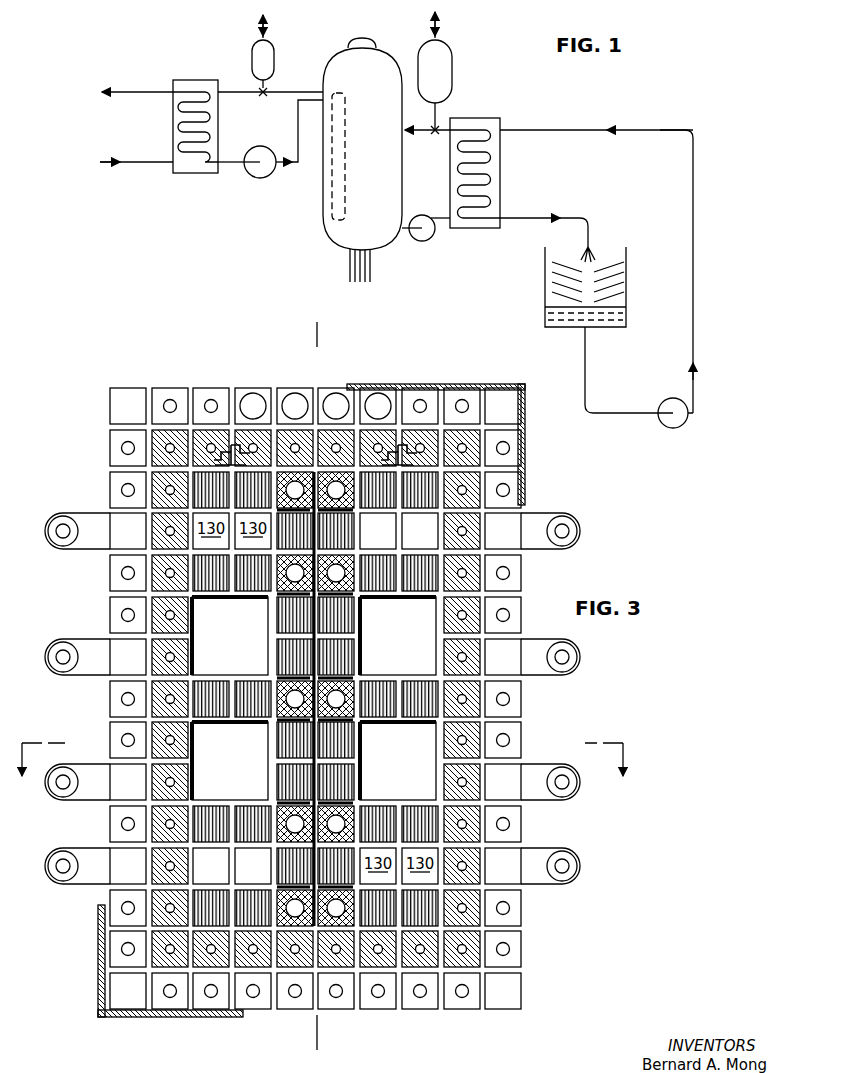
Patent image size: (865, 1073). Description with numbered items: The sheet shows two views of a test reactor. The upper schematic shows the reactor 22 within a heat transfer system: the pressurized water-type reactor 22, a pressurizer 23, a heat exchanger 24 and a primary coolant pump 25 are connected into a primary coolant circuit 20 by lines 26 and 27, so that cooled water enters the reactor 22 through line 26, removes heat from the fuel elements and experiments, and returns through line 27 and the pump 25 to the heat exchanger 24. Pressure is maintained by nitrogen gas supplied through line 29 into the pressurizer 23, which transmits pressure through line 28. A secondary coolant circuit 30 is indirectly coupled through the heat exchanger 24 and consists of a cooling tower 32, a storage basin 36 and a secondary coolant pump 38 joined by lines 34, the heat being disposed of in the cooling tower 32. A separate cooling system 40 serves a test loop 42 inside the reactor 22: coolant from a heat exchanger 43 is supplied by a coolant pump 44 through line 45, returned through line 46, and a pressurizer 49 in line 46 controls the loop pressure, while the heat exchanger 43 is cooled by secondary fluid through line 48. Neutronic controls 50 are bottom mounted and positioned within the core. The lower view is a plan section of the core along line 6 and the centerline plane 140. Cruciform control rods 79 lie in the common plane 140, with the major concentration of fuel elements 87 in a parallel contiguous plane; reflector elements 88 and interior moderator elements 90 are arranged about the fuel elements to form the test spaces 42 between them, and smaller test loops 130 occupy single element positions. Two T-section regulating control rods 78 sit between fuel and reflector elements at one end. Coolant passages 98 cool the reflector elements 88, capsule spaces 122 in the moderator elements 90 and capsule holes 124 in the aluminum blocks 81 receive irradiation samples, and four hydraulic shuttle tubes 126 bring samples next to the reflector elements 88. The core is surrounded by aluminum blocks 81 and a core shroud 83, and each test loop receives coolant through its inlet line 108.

In FIG. 1, the primary coolant circuit 20 is at (372, 161).
In FIG. 1, the pressurized water-type reactor 22 is at (372, 163).
In FIG. 1, the pressurizer 23 is at (444, 80).
In FIG. 1, the heat exchanger 24 is at (493, 229).
In FIG. 1, the primary coolant pump 25 is at (430, 238).
In FIG. 1, the line 26 is at (421, 133).
In FIG. 1, the line 27 is at (409, 222).
In FIG. 1, the line 28 is at (440, 115).
In FIG. 1, the line 29 is at (440, 32).
In FIG. 1, the secondary coolant circuit 30 is at (587, 126).
In FIG. 1, the cooling tower 32 is at (618, 292).
In FIG. 1, the lines 34 is at (692, 238).
In FIG. 1, the storage basin 36 is at (612, 318).
In FIG. 1, the secondary coolant pump 38 is at (686, 413).
In FIG. 1, the separate cooling system 40 is at (240, 78).
In FIG. 1, the test loop 42 is at (345, 182).
In FIG. 3, the test loop 42 is at (242, 664).
In FIG. 1, the heat exchanger 43 is at (197, 174).
In FIG. 1, the coolant pump 44 is at (260, 158).
In FIG. 1, the line 45 is at (297, 135).
In FIG. 1, the line 46 is at (281, 91).
In FIG. 1, the line 48 is at (123, 90).
In FIG. 1, the pressurizer 49 is at (272, 46).
In FIG. 1, the neutronic controls 50 is at (346, 270).
In FIG. 3, the section line 6- 6 is at (321, 772).
In FIG. 3, the regulating control rod 78 is at (231, 445).
In FIG. 3, the control rod 79 is at (330, 680).
In FIG. 3, the aluminum block 81 is at (165, 388).
In FIG. 3, the core shroud 83 is at (525, 460).
In FIG. 3, the fuel element 87 is at (292, 642).
In FIG. 3, the reflector element 88 is at (478, 773).
In FIG. 3, the interior moderator element 90 is at (333, 826).
In FIG. 3, the coolant passage 98 is at (472, 730).
In FIG. 3, the inlet line 108 is at (63, 531).
In FIG. 3, the capsule space 122 is at (296, 826).
In FIG. 3, the capsule hole 124 is at (125, 488).
In FIG. 3, the hydraulic shuttle tube 126 is at (372, 410).
In FIG. 3, the small test loop 130 is at (315, 698).
In FIG. 3, the common plane 140 is at (322, 328).